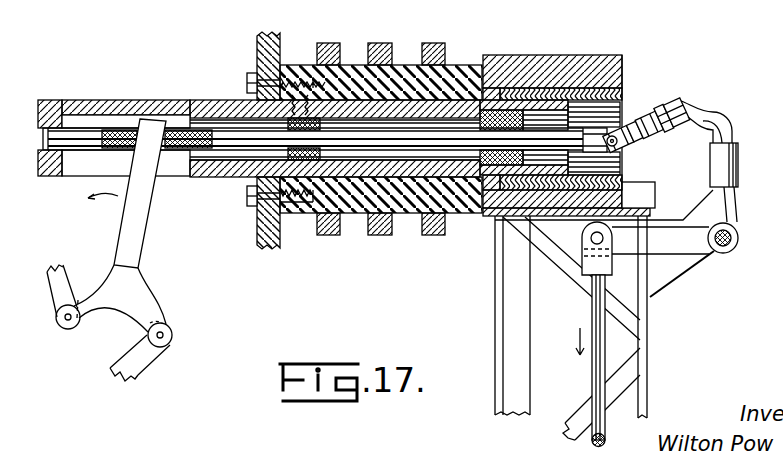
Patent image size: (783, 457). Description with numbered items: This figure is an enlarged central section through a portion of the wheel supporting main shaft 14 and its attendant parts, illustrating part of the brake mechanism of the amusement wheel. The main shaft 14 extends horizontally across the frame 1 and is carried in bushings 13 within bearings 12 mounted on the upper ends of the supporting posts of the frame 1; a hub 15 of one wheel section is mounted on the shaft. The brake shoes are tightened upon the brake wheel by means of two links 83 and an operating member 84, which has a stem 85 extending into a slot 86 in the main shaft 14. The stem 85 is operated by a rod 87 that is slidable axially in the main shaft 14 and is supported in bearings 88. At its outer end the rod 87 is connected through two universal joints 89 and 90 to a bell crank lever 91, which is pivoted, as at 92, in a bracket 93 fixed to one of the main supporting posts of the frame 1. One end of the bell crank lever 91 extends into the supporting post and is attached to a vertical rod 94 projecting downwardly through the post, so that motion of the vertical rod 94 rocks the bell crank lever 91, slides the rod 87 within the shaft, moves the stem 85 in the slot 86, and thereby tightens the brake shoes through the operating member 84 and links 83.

The frame 1 is at (658, 388).
The bearings 12 is at (600, 55).
The bushings 13 is at (623, 94).
The main shaft 14 is at (157, 100).
The hub 15 is at (347, 65).
The links 83 is at (71, 273).
The operating member 84 is at (148, 300).
The stem 85 is at (146, 229).
The slot 86 is at (92, 122).
The rod 87 is at (248, 142).
The bearings 88 is at (287, 214).
The universal joint 89 is at (608, 151).
The universal joint 90 is at (679, 108).
The bell crank lever 91 is at (737, 205).
The pivot 92 is at (729, 252).
The bracket 93 is at (660, 284).
The vertical rod 94 is at (590, 377).